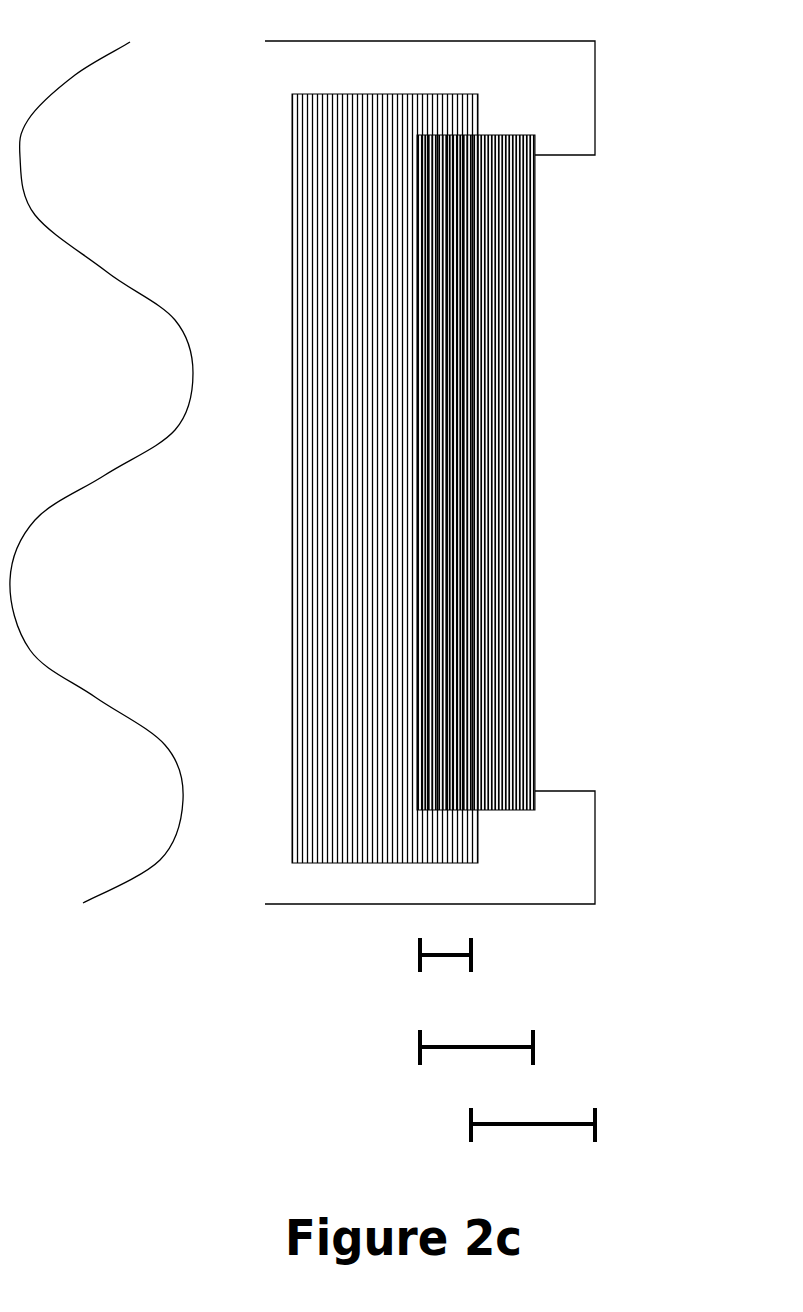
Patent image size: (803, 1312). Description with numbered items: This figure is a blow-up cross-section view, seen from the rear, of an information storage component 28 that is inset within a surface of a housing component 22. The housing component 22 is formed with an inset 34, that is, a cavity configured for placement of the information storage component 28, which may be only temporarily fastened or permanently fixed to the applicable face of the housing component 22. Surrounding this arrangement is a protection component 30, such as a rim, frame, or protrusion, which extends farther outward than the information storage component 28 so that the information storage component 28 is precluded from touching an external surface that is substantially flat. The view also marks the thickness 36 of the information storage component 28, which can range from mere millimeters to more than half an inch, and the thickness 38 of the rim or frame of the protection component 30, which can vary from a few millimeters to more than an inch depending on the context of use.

The housing component 22 is at (455, 98).
The information storage component 28 is at (536, 512).
The protection component 30 is at (578, 79).
The inset 34 is at (445, 964).
The thickness of the information storage component 36 is at (476, 1057).
The thickness of the rim or frame of the protection component 38 is at (533, 1132).